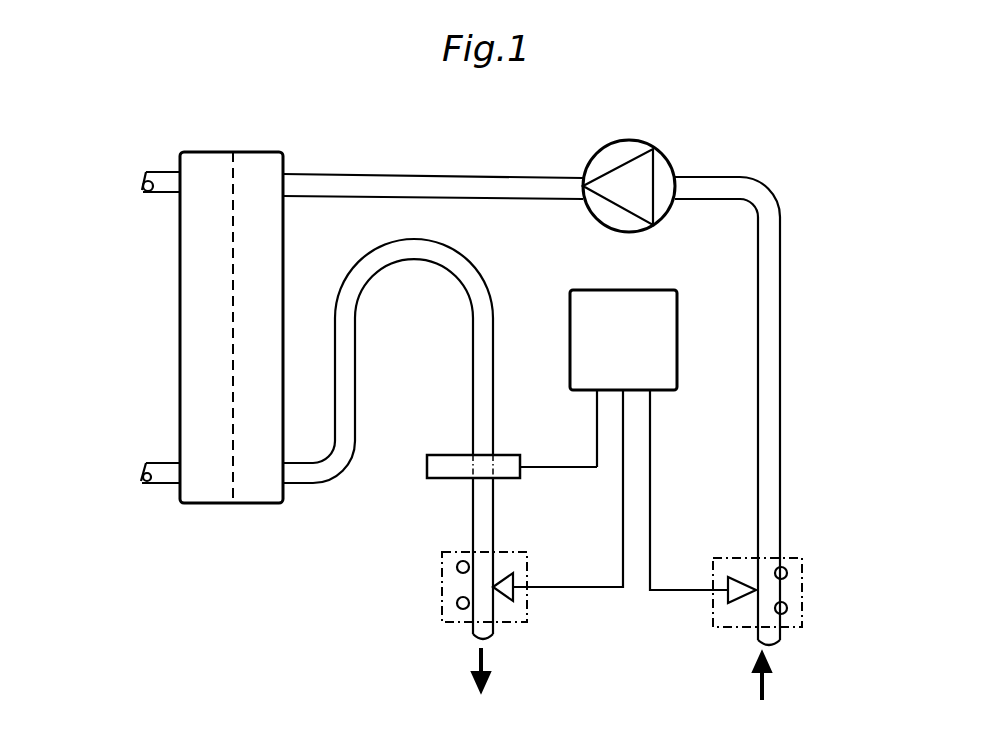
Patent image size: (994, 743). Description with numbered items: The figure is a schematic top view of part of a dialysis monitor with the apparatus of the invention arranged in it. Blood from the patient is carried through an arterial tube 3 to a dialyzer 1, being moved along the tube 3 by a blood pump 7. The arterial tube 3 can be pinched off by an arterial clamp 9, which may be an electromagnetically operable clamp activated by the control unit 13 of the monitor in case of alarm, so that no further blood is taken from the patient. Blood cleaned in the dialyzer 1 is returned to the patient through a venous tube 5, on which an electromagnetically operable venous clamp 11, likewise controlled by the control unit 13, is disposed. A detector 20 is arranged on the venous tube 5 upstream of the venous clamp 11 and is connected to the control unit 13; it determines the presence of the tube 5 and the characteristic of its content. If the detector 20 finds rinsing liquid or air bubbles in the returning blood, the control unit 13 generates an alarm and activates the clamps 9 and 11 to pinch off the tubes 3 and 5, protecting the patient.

The dialyzer 1 is at (265, 170).
The arterial tube 3 is at (782, 243).
The venous tube 5 is at (472, 338).
The blood pump 7 is at (665, 153).
The arterial clamp 9 is at (809, 616).
The venous clamp 11 is at (437, 589).
The control unit 13 is at (570, 343).
The detector 20 is at (456, 478).